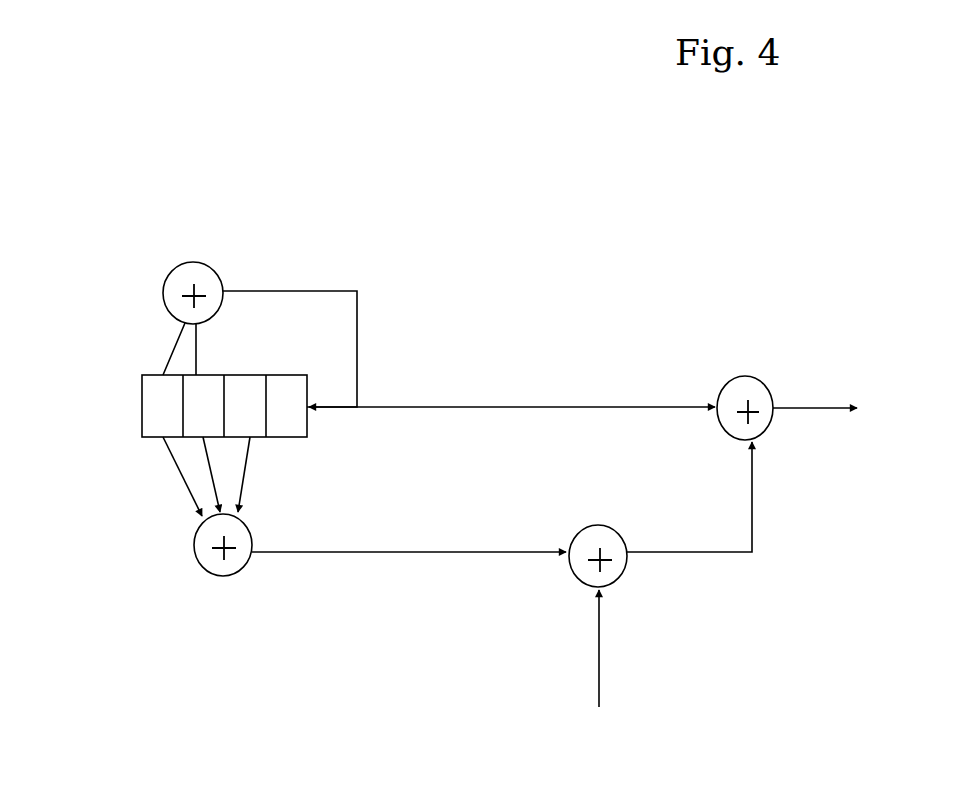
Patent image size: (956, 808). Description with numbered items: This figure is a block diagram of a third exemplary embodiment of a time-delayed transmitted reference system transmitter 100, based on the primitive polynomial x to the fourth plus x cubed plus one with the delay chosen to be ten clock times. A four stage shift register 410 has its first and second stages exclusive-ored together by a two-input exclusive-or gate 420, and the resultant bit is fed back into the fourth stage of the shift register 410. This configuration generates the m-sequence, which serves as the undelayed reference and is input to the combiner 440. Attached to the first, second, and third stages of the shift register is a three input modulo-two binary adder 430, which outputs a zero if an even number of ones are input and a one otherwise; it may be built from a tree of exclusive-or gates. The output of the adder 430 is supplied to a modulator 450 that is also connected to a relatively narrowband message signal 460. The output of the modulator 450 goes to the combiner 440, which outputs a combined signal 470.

The time-delayed transmitted reference system transmitter 100 is at (653, 206).
The four stage shift register 410 is at (140, 405).
The two-input exclusive-or gate 420 is at (177, 260).
The three input mod-2 binary adder 430 is at (205, 580).
The combiner 440 is at (762, 378).
The modulator 450 is at (595, 525).
The narrowband message signal 460 is at (600, 660).
The combined signal 470 is at (815, 407).